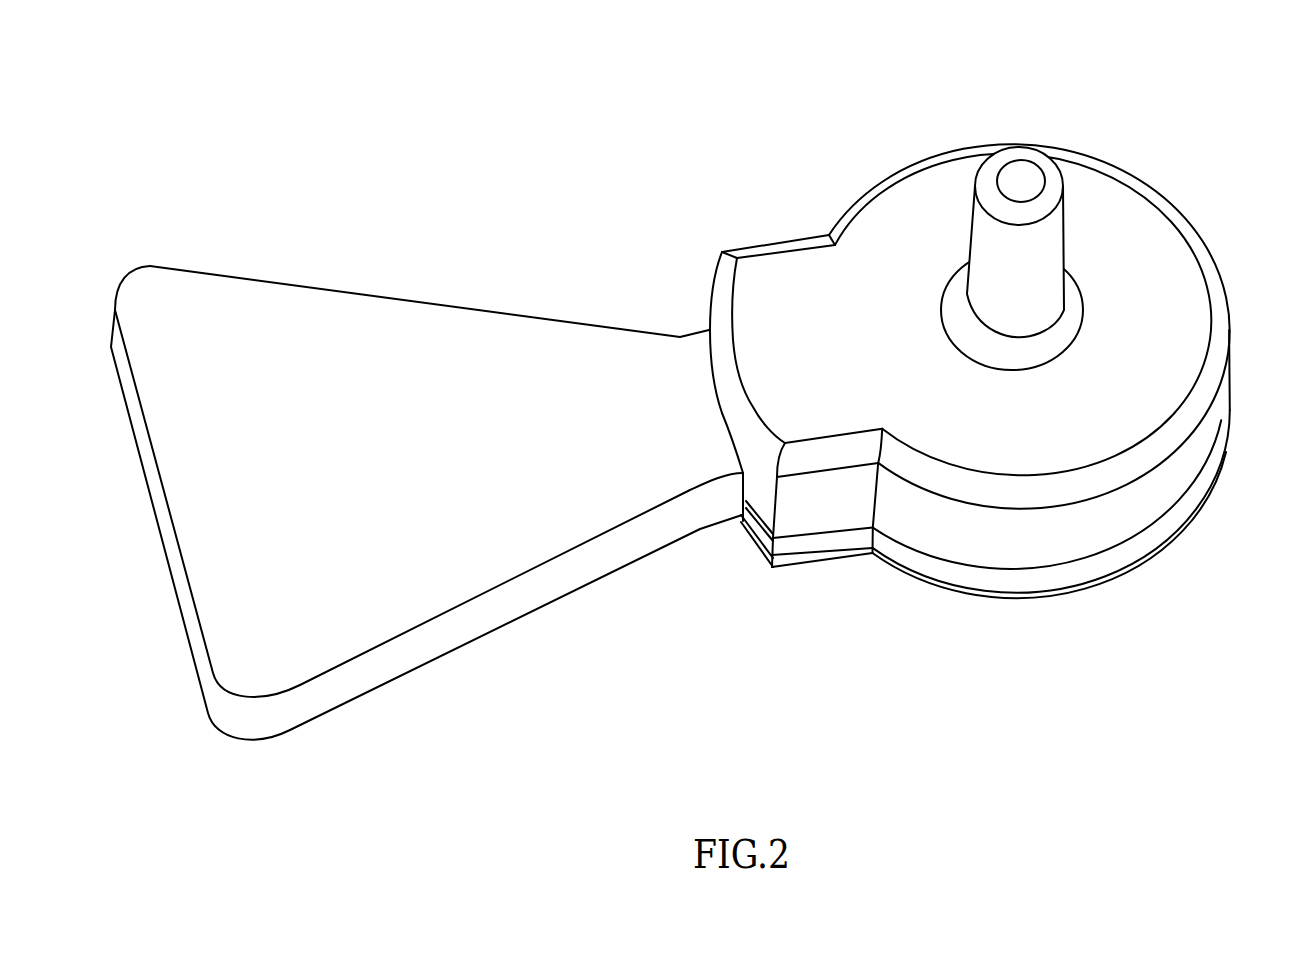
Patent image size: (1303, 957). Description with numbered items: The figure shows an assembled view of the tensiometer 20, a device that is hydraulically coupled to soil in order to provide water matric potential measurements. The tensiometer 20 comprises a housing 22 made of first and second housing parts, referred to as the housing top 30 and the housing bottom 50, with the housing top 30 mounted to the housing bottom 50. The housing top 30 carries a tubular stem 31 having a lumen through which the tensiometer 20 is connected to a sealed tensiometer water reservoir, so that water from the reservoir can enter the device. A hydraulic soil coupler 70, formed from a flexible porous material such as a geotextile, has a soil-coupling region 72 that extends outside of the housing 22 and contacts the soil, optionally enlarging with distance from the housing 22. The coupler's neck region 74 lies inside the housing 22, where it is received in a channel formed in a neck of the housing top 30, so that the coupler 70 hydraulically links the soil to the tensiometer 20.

The tensiometer 20 is at (1168, 138).
The housing 22 is at (1250, 681).
The housing top 30 is at (1134, 504).
The tubular stem 31 is at (1032, 150).
The housing bottom 50 is at (1082, 578).
The hydraulic soil coupler 70 is at (800, 616).
The soil-coupling region 72 is at (633, 532).
The neck region 74 is at (732, 500).